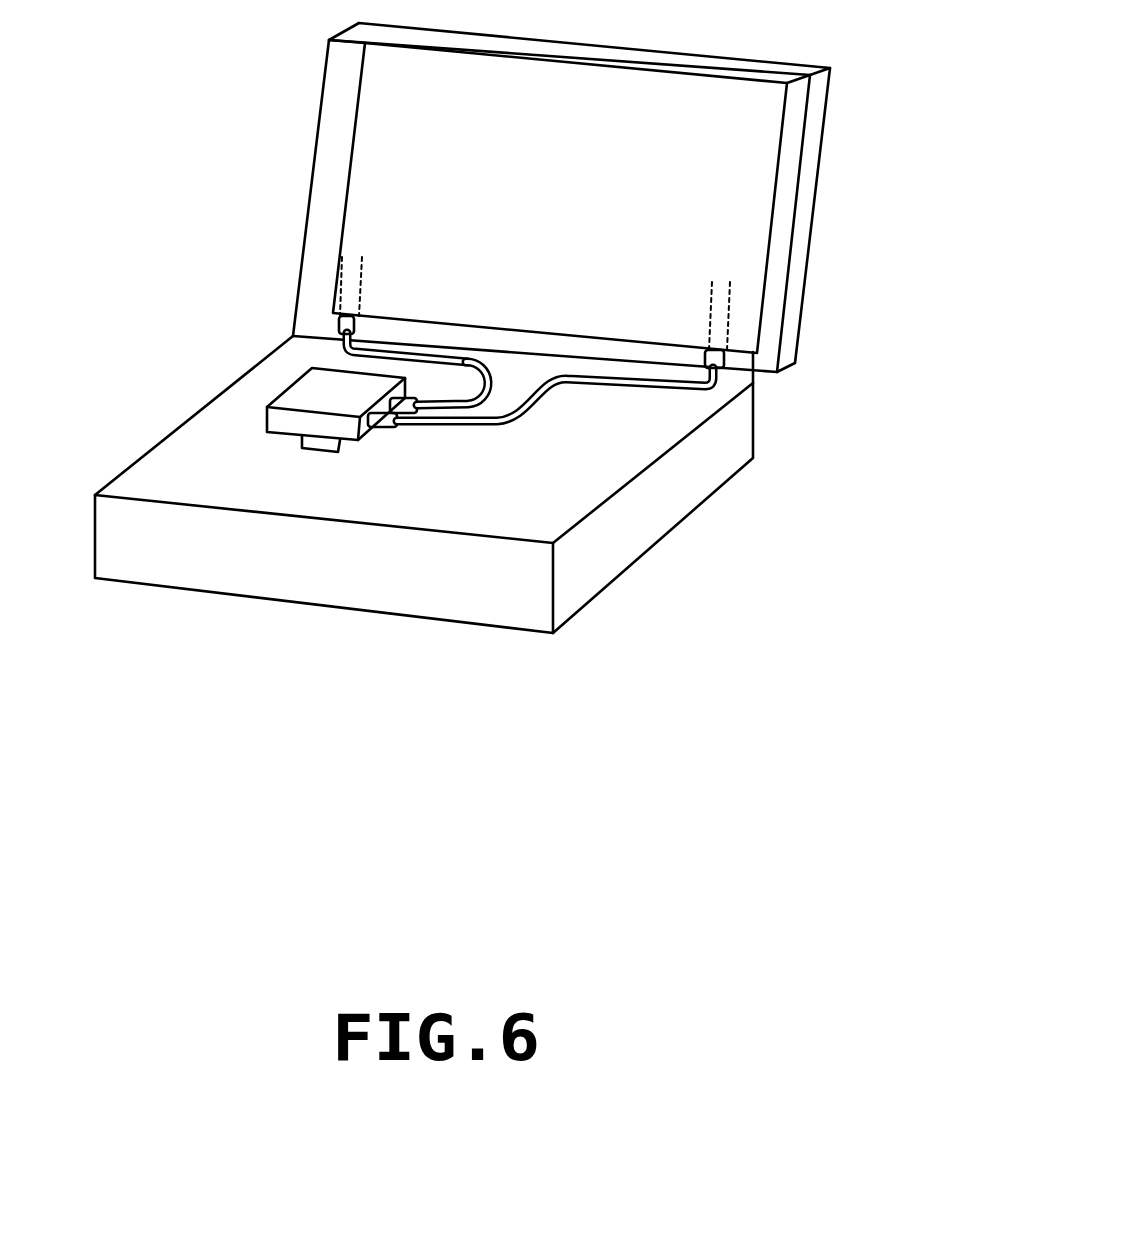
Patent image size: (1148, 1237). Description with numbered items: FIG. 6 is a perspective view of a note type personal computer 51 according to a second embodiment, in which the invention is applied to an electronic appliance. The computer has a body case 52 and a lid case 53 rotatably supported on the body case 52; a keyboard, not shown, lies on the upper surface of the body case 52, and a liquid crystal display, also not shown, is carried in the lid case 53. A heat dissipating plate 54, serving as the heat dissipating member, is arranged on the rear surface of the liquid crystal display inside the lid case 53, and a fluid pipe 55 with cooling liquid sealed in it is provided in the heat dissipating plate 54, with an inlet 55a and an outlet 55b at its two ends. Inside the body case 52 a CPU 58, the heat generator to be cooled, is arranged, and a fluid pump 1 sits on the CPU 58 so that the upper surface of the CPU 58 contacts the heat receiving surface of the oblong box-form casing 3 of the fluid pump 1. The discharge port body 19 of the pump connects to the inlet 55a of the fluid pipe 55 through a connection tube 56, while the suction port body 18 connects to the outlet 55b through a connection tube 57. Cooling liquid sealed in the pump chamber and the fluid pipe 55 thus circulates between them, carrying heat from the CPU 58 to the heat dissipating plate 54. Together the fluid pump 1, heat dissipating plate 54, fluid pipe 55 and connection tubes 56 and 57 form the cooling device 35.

The fluid pump 1 is at (245, 500).
The casing 3 is at (263, 427).
The suction port body 18 is at (383, 427).
The discharge port body 19 is at (407, 413).
The cooling device 35 is at (328, 511).
The display unit (lid) 51 is at (561, 197).
The body case 52 is at (175, 562).
The lid case 53 is at (813, 222).
The heat dissipating plate 54 is at (793, 125).
The fluid pipe 55 is at (730, 318).
The inlet 55a is at (333, 318).
The outlet 55b is at (760, 370).
The connection tube 56 is at (480, 393).
The connection tube 57 is at (633, 393).
The CPU 58 is at (320, 447).